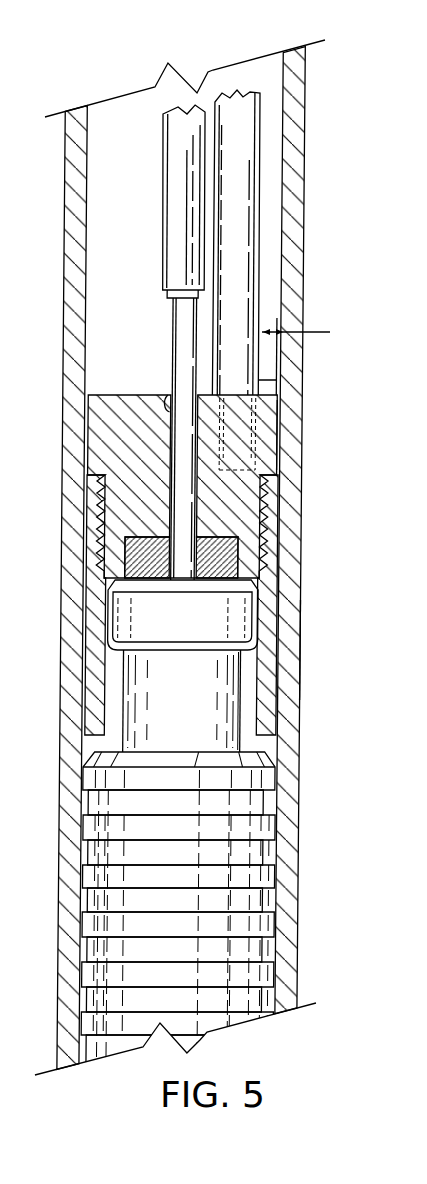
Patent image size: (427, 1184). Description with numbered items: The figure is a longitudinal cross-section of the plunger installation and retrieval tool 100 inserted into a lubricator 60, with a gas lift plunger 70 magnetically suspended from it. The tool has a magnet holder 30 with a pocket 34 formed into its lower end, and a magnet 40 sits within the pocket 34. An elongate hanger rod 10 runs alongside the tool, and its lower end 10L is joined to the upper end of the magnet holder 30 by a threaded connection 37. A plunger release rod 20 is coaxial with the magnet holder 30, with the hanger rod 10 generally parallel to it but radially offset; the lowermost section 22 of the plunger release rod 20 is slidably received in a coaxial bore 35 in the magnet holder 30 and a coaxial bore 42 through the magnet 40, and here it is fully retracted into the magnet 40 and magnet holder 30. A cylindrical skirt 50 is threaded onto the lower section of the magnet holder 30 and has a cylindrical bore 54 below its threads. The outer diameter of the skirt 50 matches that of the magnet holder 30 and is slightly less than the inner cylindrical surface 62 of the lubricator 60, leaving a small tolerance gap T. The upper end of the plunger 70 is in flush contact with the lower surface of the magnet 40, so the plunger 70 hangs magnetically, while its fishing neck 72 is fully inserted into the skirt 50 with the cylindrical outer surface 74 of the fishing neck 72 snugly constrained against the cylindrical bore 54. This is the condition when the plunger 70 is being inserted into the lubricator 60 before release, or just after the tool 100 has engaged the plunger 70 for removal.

The plunger installation and retrieval tool 100 is at (147, 160).
The inner cylindrical surface 62 is at (104, 126).
The lubricator 60 is at (296, 272).
The fishing neck 72 is at (300, 651).
The plunger release rod 20 is at (170, 219).
The hanger rod 10 is at (257, 206).
The lower end 10L is at (278, 380).
The tolerance gap T is at (305, 332).
The magnet holder 30 is at (120, 396).
The threaded connection 37 is at (279, 437).
The cylindrical skirt 50 is at (270, 724).
The pocket 34 is at (218, 533).
The magnet 40 is at (262, 565).
The lowermost section 22 is at (176, 373).
The coaxial bore 35 is at (183, 398).
The coaxial bore 42 is at (183, 581).
The cylindrical outer surface 74 is at (187, 630).
The cylindrical bore 54 is at (268, 755).
The gas lift plunger 70 is at (268, 882).